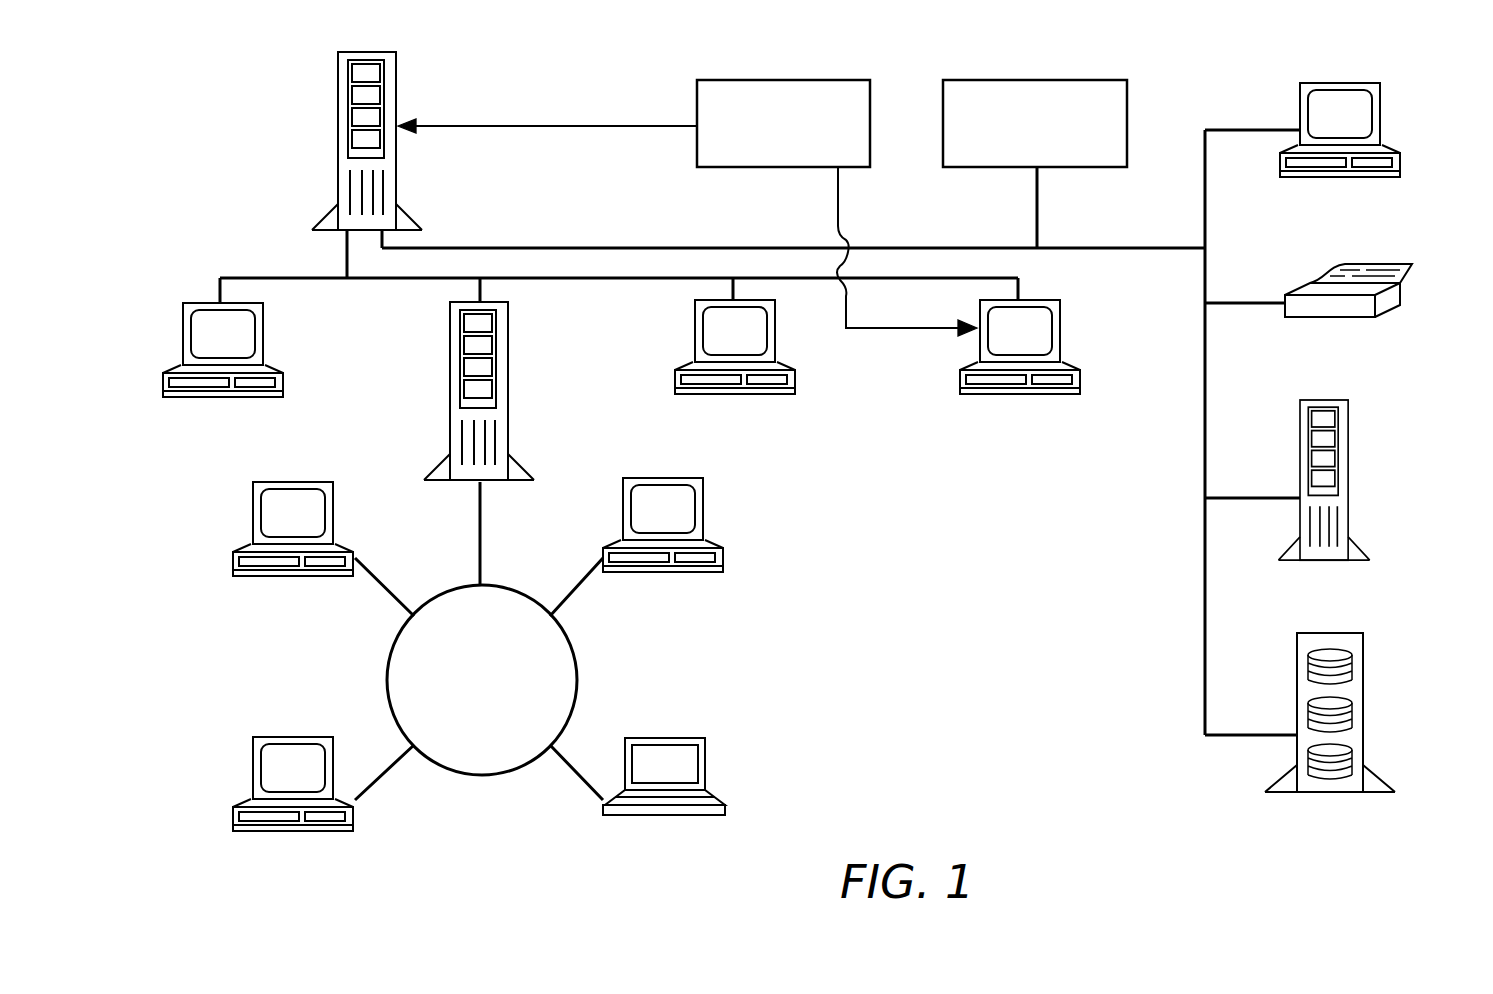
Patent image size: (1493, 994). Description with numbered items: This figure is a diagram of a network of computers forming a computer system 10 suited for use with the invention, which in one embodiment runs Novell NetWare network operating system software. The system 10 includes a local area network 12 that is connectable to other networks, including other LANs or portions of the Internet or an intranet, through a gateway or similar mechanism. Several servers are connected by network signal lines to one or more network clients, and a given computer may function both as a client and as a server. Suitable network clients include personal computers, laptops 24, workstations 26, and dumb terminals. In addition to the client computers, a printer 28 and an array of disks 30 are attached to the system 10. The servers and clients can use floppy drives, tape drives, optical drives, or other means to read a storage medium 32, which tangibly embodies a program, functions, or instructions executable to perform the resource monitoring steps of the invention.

The computer system 10 is at (252, 146).
The local area network 12 is at (305, 280).
The laptops 24 is at (707, 755).
The workstations 26 is at (1352, 475).
The printer 28 is at (1405, 292).
The array of disks 30 is at (1366, 708).
The storage medium 32 is at (776, 80).